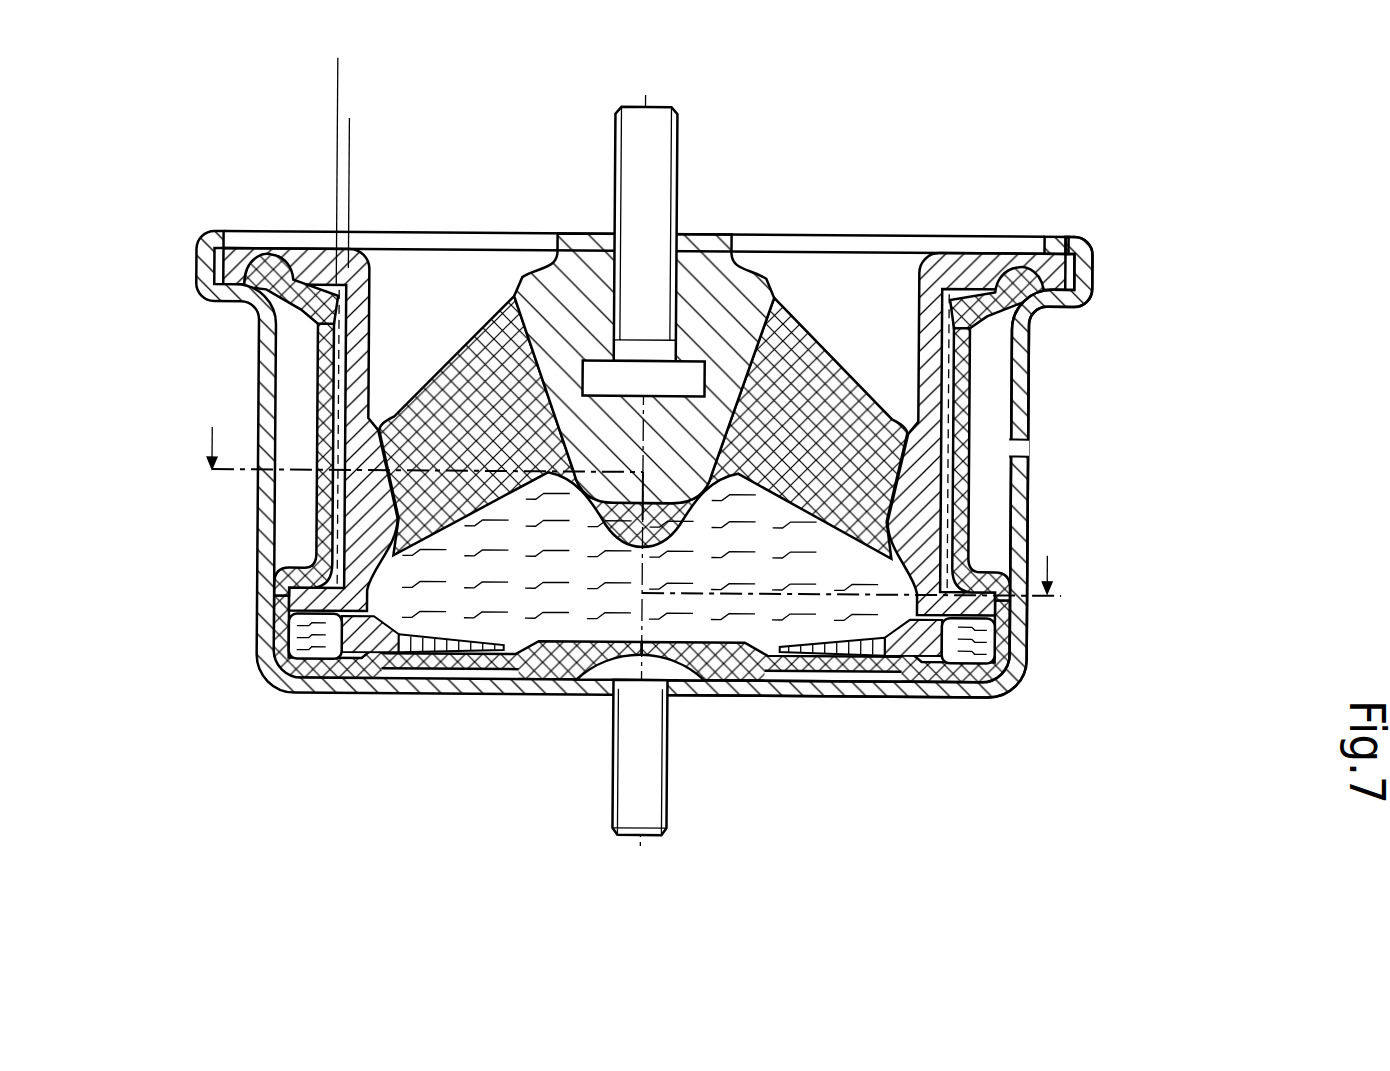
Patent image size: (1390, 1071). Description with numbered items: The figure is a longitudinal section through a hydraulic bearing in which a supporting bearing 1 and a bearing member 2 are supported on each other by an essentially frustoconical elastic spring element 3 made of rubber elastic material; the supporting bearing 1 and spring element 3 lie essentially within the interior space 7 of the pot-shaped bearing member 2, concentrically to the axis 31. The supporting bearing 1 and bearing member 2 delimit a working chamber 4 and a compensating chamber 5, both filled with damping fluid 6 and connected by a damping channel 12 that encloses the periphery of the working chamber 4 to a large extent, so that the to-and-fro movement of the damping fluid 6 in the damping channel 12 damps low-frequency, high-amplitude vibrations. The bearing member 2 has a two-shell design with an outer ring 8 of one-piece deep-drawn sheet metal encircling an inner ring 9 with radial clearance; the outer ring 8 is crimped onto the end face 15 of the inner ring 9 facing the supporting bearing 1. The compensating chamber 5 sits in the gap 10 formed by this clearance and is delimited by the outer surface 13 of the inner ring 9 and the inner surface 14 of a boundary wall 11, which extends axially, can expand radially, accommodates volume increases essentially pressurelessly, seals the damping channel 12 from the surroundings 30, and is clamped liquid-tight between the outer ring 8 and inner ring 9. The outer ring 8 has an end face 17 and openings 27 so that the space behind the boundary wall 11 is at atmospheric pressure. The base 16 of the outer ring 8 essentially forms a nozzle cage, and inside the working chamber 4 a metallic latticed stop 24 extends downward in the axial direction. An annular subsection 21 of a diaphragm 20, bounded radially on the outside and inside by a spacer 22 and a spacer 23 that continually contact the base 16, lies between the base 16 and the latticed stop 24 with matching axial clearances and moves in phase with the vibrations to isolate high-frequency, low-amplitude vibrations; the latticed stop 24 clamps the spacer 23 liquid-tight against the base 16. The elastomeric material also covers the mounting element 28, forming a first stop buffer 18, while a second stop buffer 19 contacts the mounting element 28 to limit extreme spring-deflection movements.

The supporting bearing 1 is at (690, 298).
The bearing member 2 is at (523, 665).
The elastic spring element 3 is at (800, 345).
The working chamber 4 is at (752, 582).
The compensating chamber 5 is at (962, 360).
The damping fluid 6 is at (548, 620).
The interior space 7 is at (890, 400).
The outer ring 8 is at (265, 432).
The inner ring 9 is at (366, 340).
The gap 10 is at (292, 525).
The boundary wall 11 is at (325, 418).
The damping channel 12 is at (1028, 668).
The outer surface 13 is at (348, 170).
The inner surface 14 is at (338, 86).
The end face 15 is at (945, 254).
The base 16 is at (655, 545).
The end face 17 is at (940, 706).
The first stop buffer 18 is at (670, 682).
The second stop buffer 19 is at (767, 683).
The diaphragm 20 is at (880, 687).
The annular subsection 21 is at (432, 668).
The spacer 22 is at (350, 662).
The spacer 23 is at (545, 675).
The latticed stop 24 is at (905, 624).
The opening 27 is at (1022, 442).
The mounting element 28 is at (625, 803).
The surroundings 30 is at (1141, 447).
The axis 31 is at (650, 98).